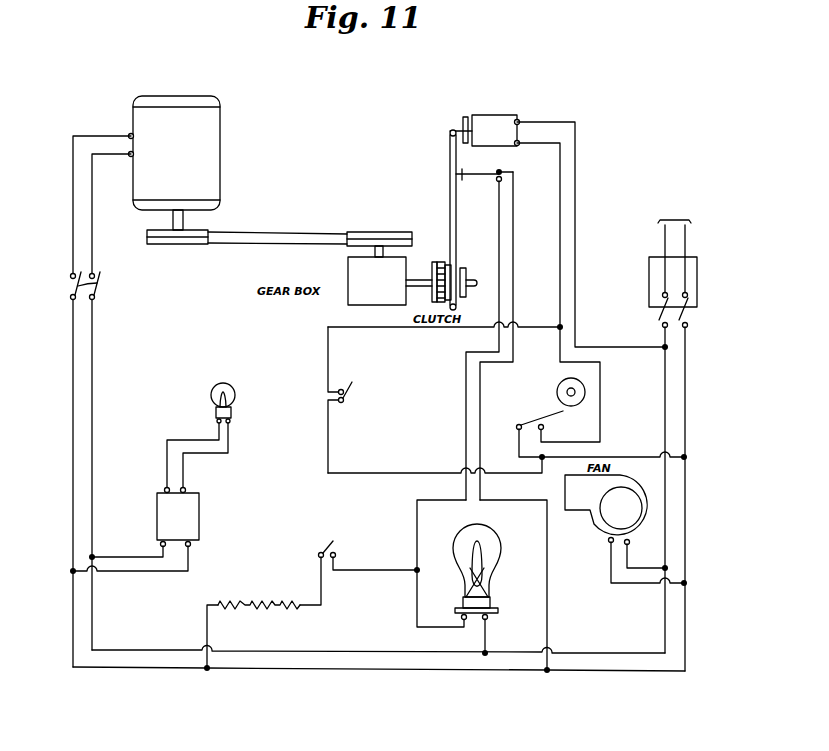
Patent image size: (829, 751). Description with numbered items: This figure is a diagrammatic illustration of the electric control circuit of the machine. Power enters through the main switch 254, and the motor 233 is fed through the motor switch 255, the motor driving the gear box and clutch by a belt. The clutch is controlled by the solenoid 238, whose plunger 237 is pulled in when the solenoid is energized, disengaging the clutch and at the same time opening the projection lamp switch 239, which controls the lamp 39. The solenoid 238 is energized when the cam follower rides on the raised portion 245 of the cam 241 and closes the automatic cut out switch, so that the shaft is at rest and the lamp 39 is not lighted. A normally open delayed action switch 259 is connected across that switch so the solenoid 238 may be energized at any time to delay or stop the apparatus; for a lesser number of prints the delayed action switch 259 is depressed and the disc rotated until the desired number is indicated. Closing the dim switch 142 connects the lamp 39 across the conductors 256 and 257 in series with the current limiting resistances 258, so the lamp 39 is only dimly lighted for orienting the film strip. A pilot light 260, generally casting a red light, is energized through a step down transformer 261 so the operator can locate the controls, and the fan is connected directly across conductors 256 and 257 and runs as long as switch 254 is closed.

The motor 233 is at (207, 121).
The plunger 237 is at (463, 120).
The solenoid 238 is at (518, 132).
The switch 239 is at (462, 180).
The cam 241 is at (519, 427).
The raised portion 245 is at (558, 398).
The main switch 254 is at (660, 318).
The motor switch 255 is at (70, 289).
The conductor 256 is at (424, 670).
The conductor 257 is at (408, 652).
The current limiting resistances 258 is at (260, 591).
The delayed action switch 259 is at (358, 372).
The pilot light 260 is at (236, 406).
The step down transformer 261 is at (182, 509).
The switch 142 is at (320, 552).
The lamp 39 is at (487, 565).